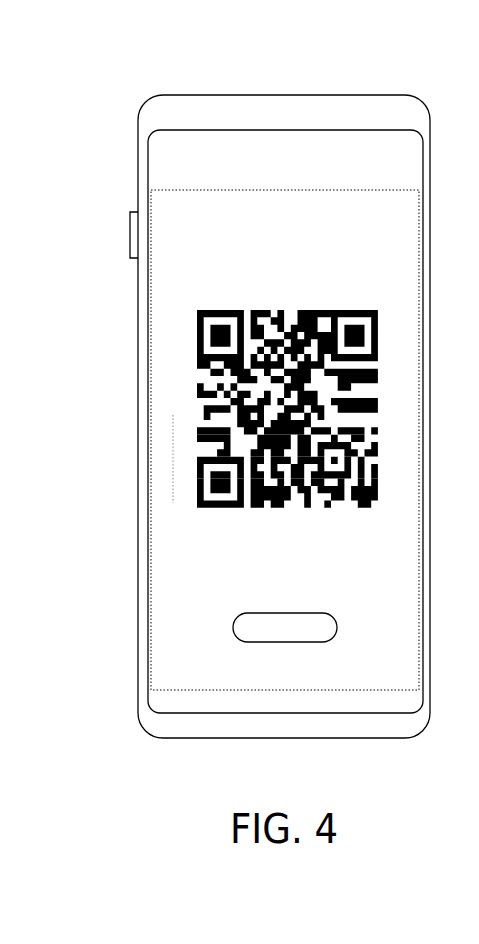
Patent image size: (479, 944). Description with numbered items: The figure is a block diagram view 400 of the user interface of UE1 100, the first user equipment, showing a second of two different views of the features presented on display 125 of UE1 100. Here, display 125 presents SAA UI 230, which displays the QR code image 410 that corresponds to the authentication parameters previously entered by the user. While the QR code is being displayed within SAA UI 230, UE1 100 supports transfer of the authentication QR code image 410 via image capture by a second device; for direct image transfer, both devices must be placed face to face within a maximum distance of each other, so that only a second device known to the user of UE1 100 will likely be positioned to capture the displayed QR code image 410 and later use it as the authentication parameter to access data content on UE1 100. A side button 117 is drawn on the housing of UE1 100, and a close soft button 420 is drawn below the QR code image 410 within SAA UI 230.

The user interface view 400 is at (292, 56).
The UE1 100 is at (318, 121).
The button 117 is at (131, 212).
The display 125 is at (328, 155).
The SAA UI 230 is at (323, 216).
The QR code image 410 is at (198, 320).
The close button 420 is at (233, 627).